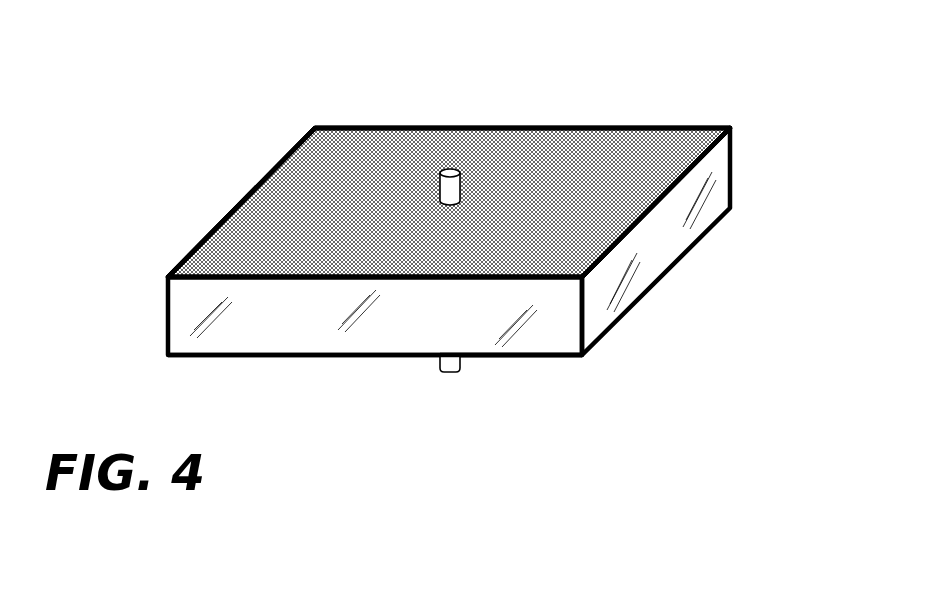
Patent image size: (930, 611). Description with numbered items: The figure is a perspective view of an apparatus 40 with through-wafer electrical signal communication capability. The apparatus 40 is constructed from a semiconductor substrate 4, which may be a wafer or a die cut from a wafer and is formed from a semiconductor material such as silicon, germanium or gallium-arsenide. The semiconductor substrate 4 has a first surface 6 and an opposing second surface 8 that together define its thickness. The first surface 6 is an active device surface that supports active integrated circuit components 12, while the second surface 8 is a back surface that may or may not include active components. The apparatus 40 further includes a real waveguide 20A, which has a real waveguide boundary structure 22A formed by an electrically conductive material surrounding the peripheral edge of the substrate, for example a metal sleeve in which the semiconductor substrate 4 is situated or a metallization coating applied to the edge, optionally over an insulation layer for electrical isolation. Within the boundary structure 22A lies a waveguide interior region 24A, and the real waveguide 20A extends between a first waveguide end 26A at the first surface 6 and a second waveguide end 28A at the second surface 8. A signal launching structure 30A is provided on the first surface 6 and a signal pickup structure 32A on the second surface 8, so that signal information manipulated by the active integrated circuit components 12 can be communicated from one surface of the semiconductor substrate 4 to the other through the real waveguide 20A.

The semiconductor substrate 4 is at (434, 239).
The first surface 6 is at (562, 145).
The second surface 8 is at (387, 358).
The active integrated circuit components 12 is at (180, 268).
The real waveguide 20A is at (148, 320).
The real waveguide boundary structure 22A is at (663, 237).
The waveguide interior region 24A is at (270, 218).
The first waveguide end 26A is at (348, 150).
The second waveguide end 28A is at (515, 380).
The signal launching structure 30A is at (450, 173).
The signal pickup structure 32A is at (452, 375).
The apparatus 40 is at (196, 86).